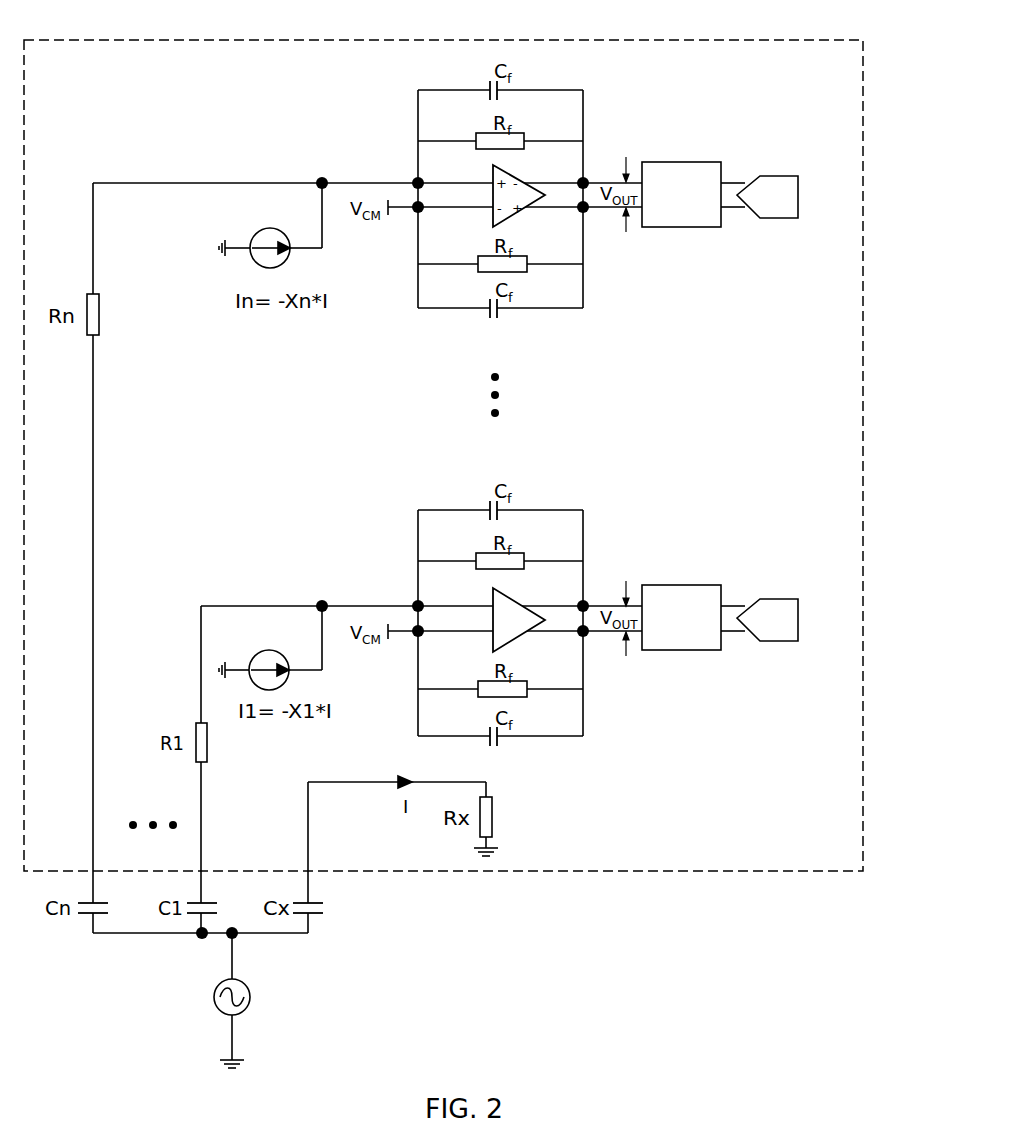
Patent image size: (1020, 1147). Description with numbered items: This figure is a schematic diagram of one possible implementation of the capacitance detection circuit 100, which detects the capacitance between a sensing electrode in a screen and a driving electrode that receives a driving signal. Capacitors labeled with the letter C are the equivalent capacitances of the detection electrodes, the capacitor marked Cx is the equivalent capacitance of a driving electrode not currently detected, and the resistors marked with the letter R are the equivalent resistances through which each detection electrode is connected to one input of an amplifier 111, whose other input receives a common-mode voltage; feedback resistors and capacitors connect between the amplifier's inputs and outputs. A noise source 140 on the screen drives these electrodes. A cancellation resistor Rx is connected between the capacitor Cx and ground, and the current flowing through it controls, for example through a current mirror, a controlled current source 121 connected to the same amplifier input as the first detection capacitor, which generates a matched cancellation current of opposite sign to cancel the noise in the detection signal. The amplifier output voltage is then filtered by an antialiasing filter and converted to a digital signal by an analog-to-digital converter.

The capacitance detection circuit 100 is at (808, 40).
The amplifier 111 is at (512, 596).
The current source 121 is at (268, 644).
The noise source 140 is at (248, 989).